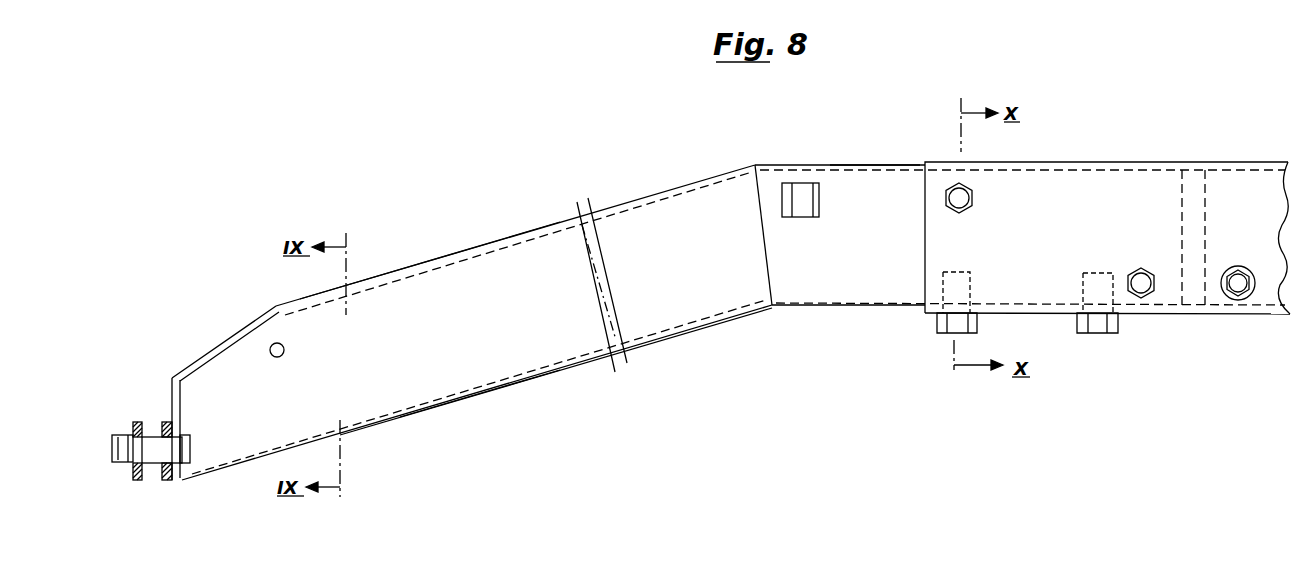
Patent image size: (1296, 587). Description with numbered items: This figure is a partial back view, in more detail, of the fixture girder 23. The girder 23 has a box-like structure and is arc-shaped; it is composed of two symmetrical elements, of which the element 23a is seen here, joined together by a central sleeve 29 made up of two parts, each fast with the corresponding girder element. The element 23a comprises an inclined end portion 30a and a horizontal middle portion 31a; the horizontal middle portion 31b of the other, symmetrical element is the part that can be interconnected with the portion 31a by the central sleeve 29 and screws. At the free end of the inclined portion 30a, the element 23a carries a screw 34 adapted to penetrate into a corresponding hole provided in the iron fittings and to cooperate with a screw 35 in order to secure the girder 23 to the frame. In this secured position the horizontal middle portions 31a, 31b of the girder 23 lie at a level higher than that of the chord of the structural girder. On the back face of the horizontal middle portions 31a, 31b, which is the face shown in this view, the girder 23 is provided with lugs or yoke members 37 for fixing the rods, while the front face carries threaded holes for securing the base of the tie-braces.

The fixture girder 23 is at (830, 318).
The element of the fixture girder 23a is at (433, 250).
The central sleeve 29 is at (1050, 185).
The inclined end portion 30a is at (478, 370).
The horizontal middle portion 31a is at (855, 187).
The horizontal middle portion 31b is at (1250, 185).
The screw 34 is at (150, 450).
The screw 35 is at (138, 478).
The lug or yoke member 37 is at (797, 197).